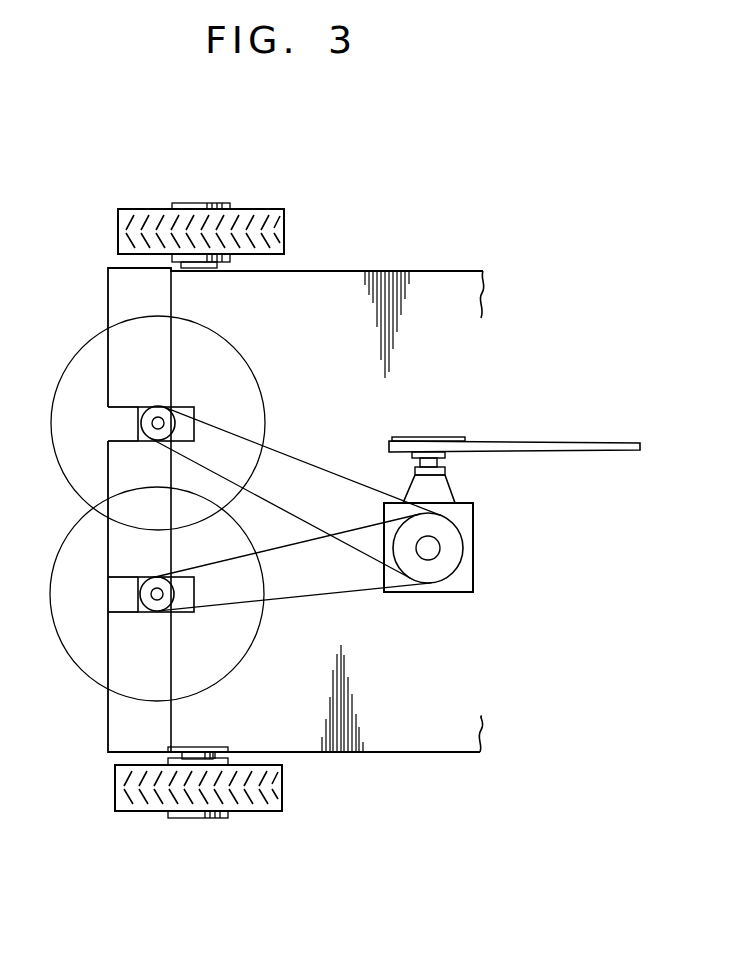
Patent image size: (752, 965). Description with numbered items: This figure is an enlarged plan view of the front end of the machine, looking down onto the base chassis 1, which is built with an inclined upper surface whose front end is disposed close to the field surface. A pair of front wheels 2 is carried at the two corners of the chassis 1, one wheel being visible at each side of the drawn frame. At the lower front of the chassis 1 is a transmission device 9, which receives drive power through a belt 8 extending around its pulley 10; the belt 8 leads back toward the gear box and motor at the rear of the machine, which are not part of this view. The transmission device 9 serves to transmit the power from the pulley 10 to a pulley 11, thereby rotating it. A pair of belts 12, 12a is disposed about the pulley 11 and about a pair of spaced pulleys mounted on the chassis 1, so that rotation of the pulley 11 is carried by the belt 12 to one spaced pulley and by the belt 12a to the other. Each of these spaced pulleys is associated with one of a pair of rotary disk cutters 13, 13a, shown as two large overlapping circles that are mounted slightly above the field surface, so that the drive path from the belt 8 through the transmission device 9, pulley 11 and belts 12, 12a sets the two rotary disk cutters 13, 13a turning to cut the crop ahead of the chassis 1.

The base chassis 1 is at (433, 740).
The front wheels 2 is at (270, 212).
The belt 8 is at (500, 440).
The transmission device 9 is at (460, 586).
The pulley 10 is at (428, 437).
The pulley 11 is at (455, 546).
The belt 12 is at (301, 598).
The belt 12a is at (294, 457).
The rotary disk cutter 13 is at (233, 655).
The rotary disk cutter 13a is at (262, 398).